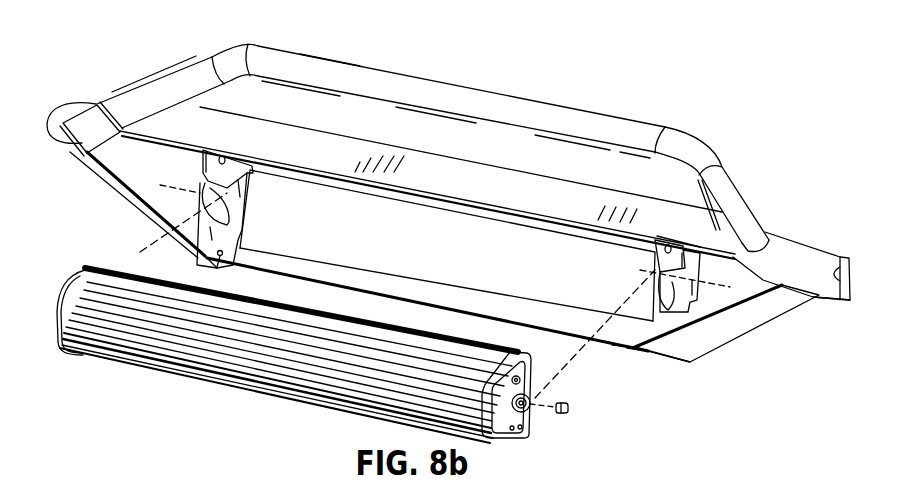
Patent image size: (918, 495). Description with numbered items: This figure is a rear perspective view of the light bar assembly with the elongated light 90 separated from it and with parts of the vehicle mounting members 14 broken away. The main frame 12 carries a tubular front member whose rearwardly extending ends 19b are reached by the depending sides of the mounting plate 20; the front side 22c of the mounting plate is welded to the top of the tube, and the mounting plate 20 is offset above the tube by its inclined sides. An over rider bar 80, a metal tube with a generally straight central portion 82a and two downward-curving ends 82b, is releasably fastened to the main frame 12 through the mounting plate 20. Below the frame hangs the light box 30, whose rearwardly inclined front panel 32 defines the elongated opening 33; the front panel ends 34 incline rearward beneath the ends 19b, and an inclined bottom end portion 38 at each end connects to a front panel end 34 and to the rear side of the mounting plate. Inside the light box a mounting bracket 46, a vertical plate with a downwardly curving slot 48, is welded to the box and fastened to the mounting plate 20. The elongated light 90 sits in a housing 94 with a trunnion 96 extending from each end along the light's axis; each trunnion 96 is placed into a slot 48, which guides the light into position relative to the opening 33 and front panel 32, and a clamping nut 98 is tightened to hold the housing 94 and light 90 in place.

The main frame 12 is at (121, 91).
The vehicle mounting members 14 is at (236, 162).
The rearwardly extending ends of the front member 19b is at (836, 293).
The mounting plate 20 is at (333, 136).
The front side of the mounting plate 22c is at (804, 248).
The light box 30 is at (127, 210).
The front panel 32 is at (325, 265).
The opening 33 is at (471, 264).
The rearwardly inclined ends of the front panel 34 is at (745, 289).
The inclined bottom end portion 38 is at (106, 176).
The mounting bracket 46 is at (671, 326).
The slot 48 is at (690, 250).
The over rider bar 80 is at (508, 100).
The central portion of the over rider bar 82a is at (429, 88).
The ends of the over rider bar 82b is at (182, 82).
The elongated light 90 is at (230, 375).
The housing 94 is at (319, 374).
The trunnion 96 is at (530, 407).
The clamping nut 98 is at (569, 408).